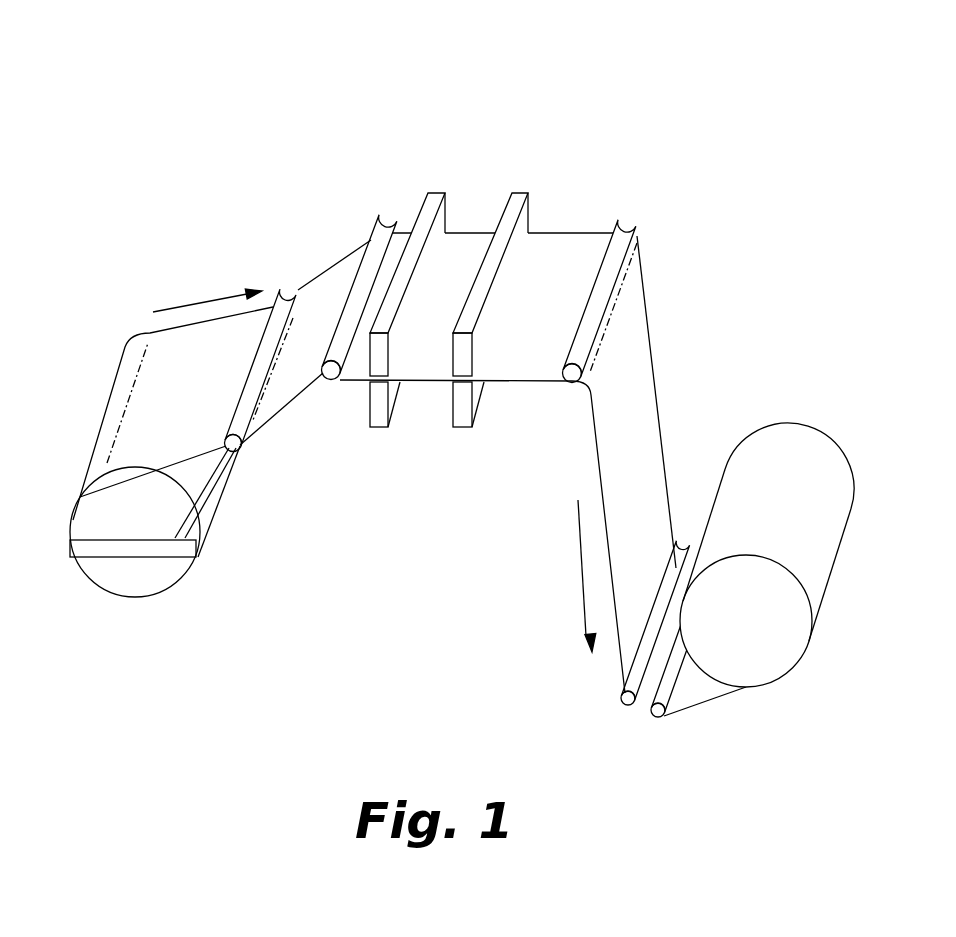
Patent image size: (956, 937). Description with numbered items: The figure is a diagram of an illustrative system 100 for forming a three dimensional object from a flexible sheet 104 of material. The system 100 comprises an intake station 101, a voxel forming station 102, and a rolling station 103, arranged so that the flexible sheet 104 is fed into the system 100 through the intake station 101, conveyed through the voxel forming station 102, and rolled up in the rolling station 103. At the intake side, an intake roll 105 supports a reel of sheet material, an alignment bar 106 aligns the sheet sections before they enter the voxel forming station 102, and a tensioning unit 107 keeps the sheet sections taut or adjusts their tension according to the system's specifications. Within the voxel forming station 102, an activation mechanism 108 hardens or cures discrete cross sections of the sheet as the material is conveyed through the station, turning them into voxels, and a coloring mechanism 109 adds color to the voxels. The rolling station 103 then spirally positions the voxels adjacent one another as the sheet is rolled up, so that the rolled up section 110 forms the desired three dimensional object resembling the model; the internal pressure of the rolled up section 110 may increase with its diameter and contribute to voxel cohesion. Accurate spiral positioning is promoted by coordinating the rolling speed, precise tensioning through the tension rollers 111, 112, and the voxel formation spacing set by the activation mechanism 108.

The system 100 is at (101, 58).
The intake station 101 is at (120, 272).
The voxel forming station 102 is at (426, 122).
The rolling station 103 is at (786, 218).
The flexible sheet 104 is at (652, 364).
The intake roll 105 is at (158, 578).
The alignment bar 106 is at (200, 502).
The tensioning unit 107 is at (284, 288).
The activation mechanism 108 is at (422, 208).
The coloring mechanism 109 is at (530, 205).
The rolled up section 110 is at (770, 445).
The tension roller 111 is at (622, 705).
The tension roller 112 is at (658, 717).